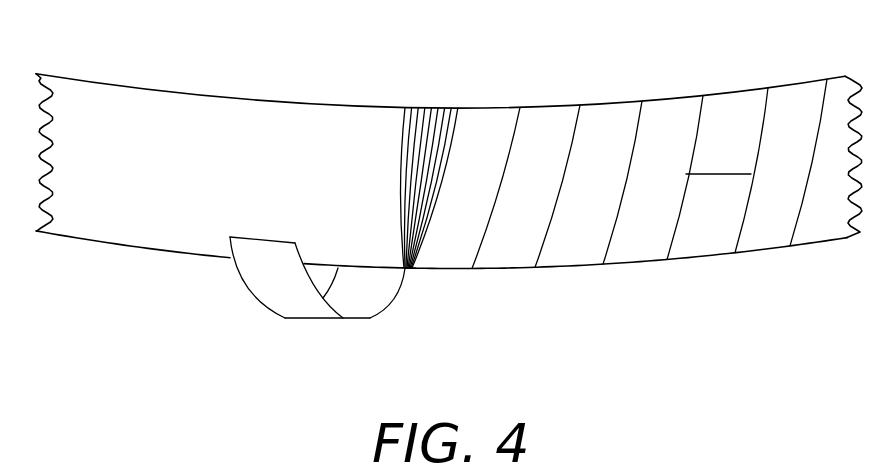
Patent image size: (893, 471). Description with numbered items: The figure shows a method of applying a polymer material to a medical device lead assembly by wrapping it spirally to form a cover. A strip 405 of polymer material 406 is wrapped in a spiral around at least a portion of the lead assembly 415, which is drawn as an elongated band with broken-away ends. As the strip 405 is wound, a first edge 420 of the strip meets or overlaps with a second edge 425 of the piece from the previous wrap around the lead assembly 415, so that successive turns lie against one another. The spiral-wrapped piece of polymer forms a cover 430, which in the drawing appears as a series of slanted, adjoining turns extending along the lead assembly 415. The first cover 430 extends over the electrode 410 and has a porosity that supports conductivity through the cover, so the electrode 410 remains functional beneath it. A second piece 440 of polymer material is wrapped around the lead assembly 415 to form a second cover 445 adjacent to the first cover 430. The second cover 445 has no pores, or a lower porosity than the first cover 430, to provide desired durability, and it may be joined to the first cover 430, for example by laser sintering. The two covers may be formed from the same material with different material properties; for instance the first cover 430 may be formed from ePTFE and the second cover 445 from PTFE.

The strip 405 is at (250, 288).
The polymer material 406 is at (325, 319).
The electrode 410 is at (427, 103).
The lead assembly 415 is at (89, 80).
The first edge 420 is at (382, 309).
The second edge 425 is at (410, 264).
The cover 430 is at (496, 104).
The second piece 440 is at (718, 260).
The second cover 445 is at (777, 253).